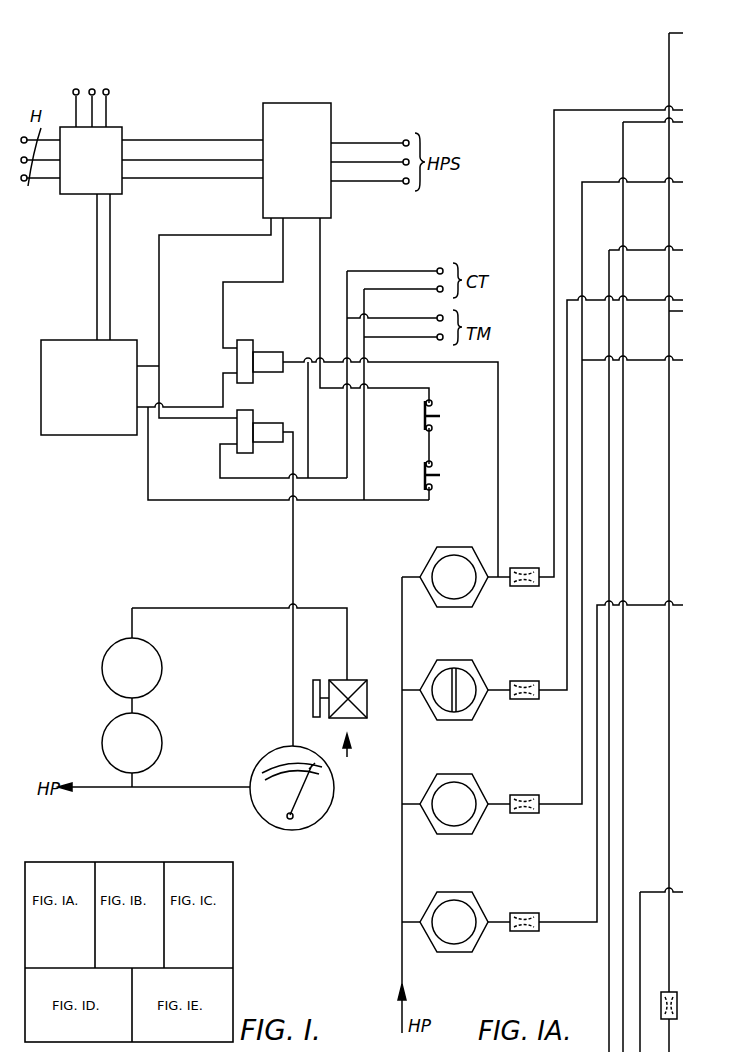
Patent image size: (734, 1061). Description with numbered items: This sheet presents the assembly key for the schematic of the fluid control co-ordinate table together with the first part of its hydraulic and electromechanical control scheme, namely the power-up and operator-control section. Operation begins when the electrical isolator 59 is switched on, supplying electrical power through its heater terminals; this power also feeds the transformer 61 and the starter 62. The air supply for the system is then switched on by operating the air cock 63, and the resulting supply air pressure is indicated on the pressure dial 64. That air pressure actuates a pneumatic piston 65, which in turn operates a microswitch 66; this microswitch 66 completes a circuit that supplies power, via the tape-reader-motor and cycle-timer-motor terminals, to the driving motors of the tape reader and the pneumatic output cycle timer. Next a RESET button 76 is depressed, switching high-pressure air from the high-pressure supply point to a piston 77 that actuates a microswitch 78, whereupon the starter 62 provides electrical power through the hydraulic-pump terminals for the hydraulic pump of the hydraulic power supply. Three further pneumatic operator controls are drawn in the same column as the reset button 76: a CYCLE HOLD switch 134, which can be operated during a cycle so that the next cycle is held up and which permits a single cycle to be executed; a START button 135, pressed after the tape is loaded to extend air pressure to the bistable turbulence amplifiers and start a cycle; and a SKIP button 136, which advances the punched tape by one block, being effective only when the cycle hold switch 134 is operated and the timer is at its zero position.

In FIG. 1, the electrical isolator 59 is at (103, 169).
In FIG. 1, the transformer 61 is at (101, 399).
In FIG. 1, the starter 62 is at (309, 169).
In FIG. 1, the air cock 63 is at (314, 690).
In FIG. 1, the pressure dial 64 is at (262, 770).
In FIG. 1, the pneumatic piston 65 is at (263, 433).
In FIG. 1, the microswitch 66 is at (240, 435).
In FIG. 1A, the RESET button 76 is at (440, 575).
In FIG. 1, the piston 77 is at (270, 362).
In FIG. 1, the microswitch 78 is at (246, 346).
In FIG. 1A, the CYCLE HOLD switch 134 is at (445, 678).
In FIG. 1A, the START button 135 is at (445, 791).
In FIG. 1A, the SKIP button 136 is at (445, 909).